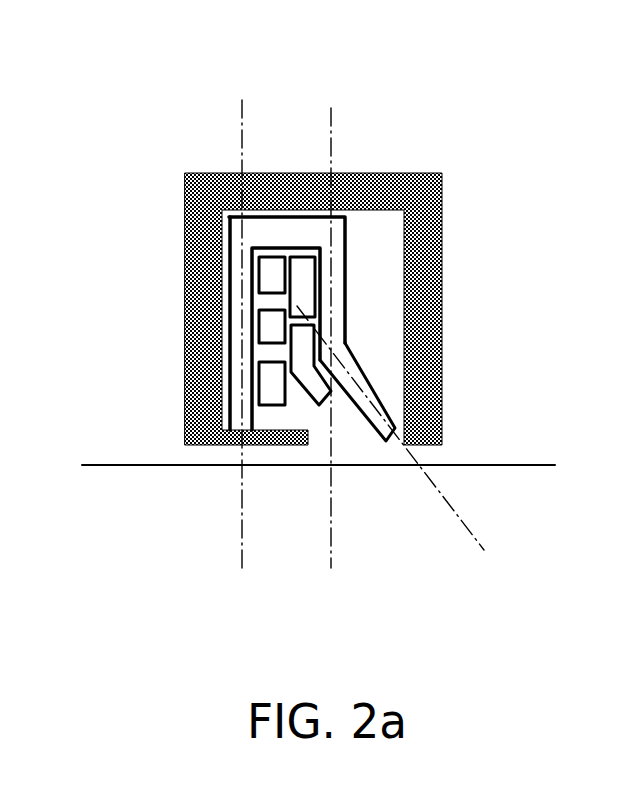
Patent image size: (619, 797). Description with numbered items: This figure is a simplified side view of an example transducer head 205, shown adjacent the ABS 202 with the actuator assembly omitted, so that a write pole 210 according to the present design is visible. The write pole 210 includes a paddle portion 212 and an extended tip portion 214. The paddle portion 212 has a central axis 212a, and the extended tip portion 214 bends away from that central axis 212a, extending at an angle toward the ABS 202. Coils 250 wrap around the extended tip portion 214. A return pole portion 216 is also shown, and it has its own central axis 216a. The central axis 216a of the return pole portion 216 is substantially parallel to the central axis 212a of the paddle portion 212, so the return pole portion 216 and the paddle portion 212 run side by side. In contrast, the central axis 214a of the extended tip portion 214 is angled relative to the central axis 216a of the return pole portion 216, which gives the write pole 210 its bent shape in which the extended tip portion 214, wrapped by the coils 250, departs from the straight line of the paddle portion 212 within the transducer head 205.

The transducer head 205 is at (465, 153).
The ABS 202 is at (475, 465).
The write pole 210 is at (330, 402).
The paddle portion 212 is at (347, 268).
The central axis of the paddle portion 212a is at (331, 110).
The extended tip portion 214 is at (385, 404).
The central axis of the extended tip portion 214a is at (484, 550).
The return pole portion 216 is at (230, 262).
The central axis of the return pole portion 216a is at (242, 100).
The coils 250 is at (258, 285).